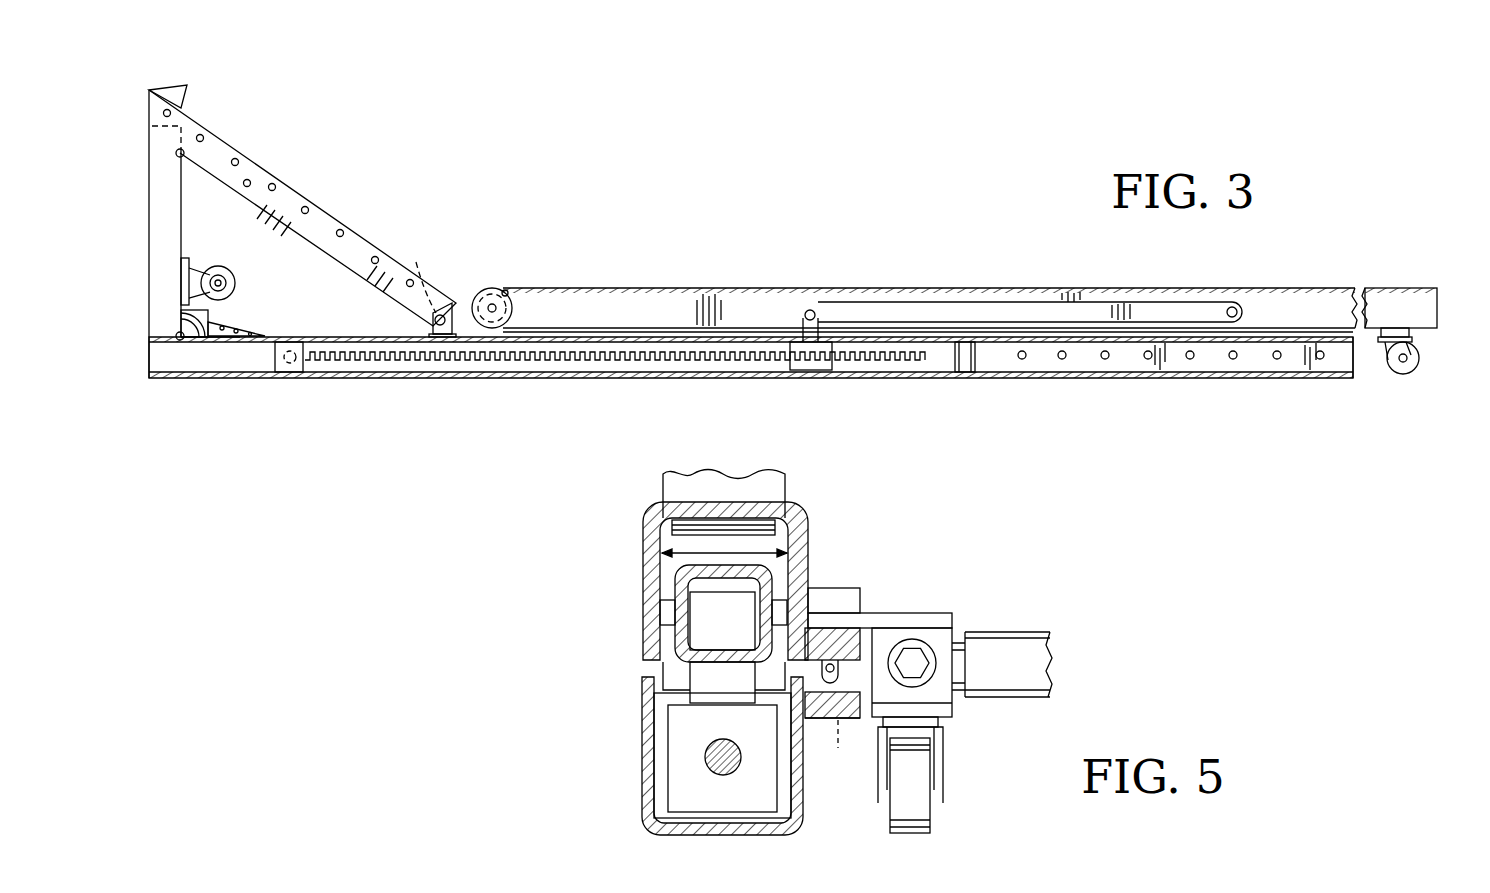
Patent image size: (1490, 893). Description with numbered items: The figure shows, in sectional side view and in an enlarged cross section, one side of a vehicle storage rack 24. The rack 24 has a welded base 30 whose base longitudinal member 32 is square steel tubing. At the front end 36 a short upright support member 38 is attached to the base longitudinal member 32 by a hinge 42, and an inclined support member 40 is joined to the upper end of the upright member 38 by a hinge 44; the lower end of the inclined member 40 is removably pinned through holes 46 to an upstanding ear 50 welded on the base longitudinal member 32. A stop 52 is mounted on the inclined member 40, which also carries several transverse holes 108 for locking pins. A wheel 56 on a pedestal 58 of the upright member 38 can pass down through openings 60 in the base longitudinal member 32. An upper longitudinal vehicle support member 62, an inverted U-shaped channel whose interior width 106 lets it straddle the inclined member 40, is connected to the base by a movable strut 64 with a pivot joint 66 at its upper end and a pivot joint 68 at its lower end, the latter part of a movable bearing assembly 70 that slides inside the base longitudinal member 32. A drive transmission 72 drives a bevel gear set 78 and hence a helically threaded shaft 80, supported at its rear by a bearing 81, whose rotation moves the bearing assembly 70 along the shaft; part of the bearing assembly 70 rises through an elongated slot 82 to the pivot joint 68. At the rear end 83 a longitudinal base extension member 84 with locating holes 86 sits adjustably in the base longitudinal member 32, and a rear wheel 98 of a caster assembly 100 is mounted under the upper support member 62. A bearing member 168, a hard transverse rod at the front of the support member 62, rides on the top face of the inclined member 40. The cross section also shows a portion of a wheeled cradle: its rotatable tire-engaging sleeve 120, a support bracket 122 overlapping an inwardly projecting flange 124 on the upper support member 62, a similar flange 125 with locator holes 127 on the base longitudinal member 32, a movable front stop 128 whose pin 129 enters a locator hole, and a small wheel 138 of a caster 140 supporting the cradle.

In FIG. 3, the rack 24 is at (760, 203).
In FIG. 3, the base 30 is at (640, 382).
In FIG. 3, the base longitudinal member 32 is at (350, 378).
In FIG. 3, the front end 36 is at (147, 345).
In FIG. 3, the upright support member 38 is at (163, 210).
In FIG. 3, the inclined support member 40 is at (325, 215).
In FIG. 3, the hinge 42 is at (180, 342).
In FIG. 3, the hinge 44 is at (190, 155).
In FIG. 3, the holes 46 is at (448, 318).
In FIG. 3, the upstanding ear 50 is at (426, 273).
In FIG. 3, the stop 52 is at (178, 92).
In FIG. 3, the wheel 56 is at (236, 280).
In FIG. 3, the pedestal 58 is at (188, 268).
In FIG. 3, the openings 60 is at (230, 340).
In FIG. 3, the upper longitudinal vehicle support member 62 is at (690, 288).
In FIG. 3, the movable strut 64 is at (935, 305).
In FIG. 5, the movable strut 64 is at (675, 575).
In FIG. 3, the pivot joint 66 is at (1232, 305).
In FIG. 3, the pivot joint 68 is at (810, 310).
In FIG. 5, the pivot joint 68 is at (745, 610).
In FIG. 3, the movable bearing assembly 70 is at (808, 370).
In FIG. 5, the movable bearing assembly 70 is at (685, 760).
In FIG. 3, the drive transmission 72 is at (210, 318).
In FIG. 3, the bevel gear set 78 is at (290, 366).
In FIG. 3, the helically threaded shaft 80 is at (470, 362).
In FIG. 5, the helically threaded shaft 80 is at (720, 774).
In FIG. 3, the bearing 81 is at (975, 355).
In FIG. 3, the elongated slot 82 is at (618, 332).
In FIG. 5, the elongated slot 82 is at (692, 680).
In FIG. 3, the rear end 83 is at (1442, 307).
In FIG. 3, the longitudinal base extension member 84 is at (1355, 355).
In FIG. 3, the locating holes 86 is at (1320, 360).
In FIG. 3, the rear wheel 98 is at (1410, 372).
In FIG. 3, the caster assembly 100 is at (1413, 345).
In FIG. 5, the interior width 106 is at (705, 550).
In FIG. 3, the transverse holes 108 is at (268, 185).
In FIG. 5, the rotatable sleeve 120 is at (1015, 672).
In FIG. 5, the support bracket 122 is at (888, 615).
In FIG. 5, the flange 124 is at (860, 645).
In FIG. 5, the flange 125 is at (858, 720).
In FIG. 5, the locator holes 127 is at (835, 750).
In FIG. 5, the movable front stop 128 is at (838, 600).
In FIG. 5, the pin 129 is at (838, 670).
In FIG. 5, the small wheel 138 is at (918, 812).
In FIG. 5, the caster 140 is at (945, 757).
In FIG. 3, the bearing member 168 is at (508, 293).
In FIG. 5, the bearing member 168 is at (735, 520).